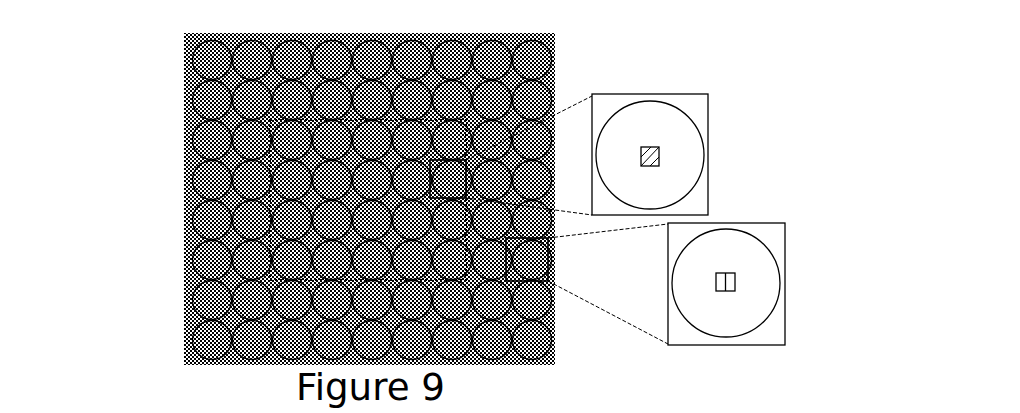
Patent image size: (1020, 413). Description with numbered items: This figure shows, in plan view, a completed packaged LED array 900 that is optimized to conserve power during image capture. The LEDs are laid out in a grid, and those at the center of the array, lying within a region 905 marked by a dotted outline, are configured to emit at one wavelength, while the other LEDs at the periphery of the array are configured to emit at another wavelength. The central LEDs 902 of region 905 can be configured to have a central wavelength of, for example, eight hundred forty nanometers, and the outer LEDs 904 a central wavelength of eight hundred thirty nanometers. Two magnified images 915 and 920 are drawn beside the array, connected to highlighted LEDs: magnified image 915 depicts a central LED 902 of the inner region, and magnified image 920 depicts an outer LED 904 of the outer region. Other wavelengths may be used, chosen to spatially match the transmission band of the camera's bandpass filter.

The LED array 900 is at (118, 64).
The central LED 902 is at (176, 146).
The outer LED 904 is at (176, 282).
The region 905 is at (176, 196).
The magnified image 915 is at (734, 92).
The magnified image 920 is at (791, 242).